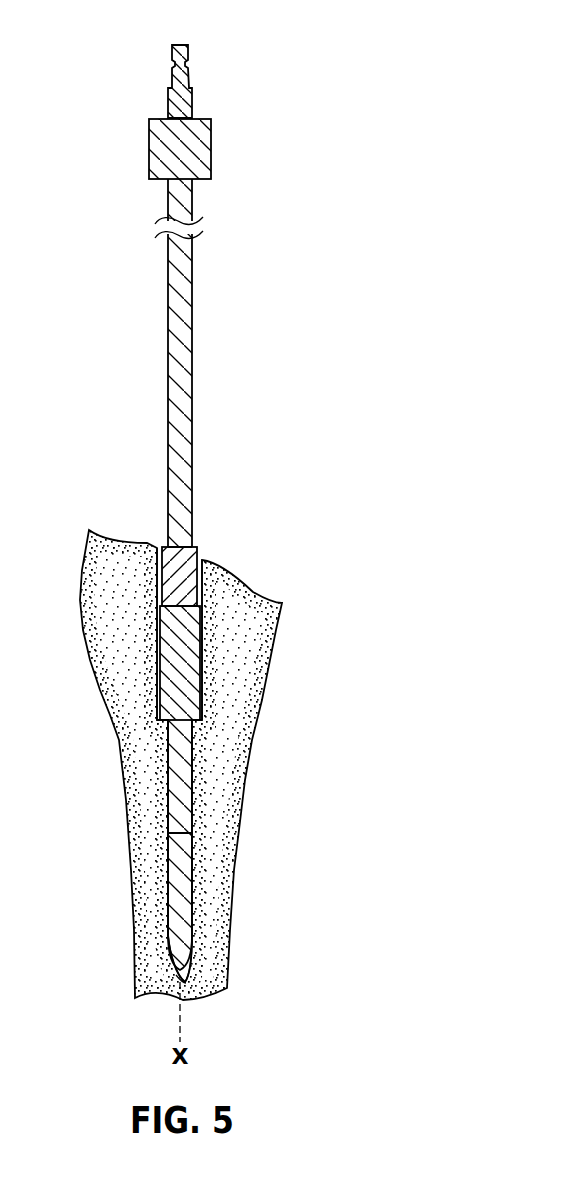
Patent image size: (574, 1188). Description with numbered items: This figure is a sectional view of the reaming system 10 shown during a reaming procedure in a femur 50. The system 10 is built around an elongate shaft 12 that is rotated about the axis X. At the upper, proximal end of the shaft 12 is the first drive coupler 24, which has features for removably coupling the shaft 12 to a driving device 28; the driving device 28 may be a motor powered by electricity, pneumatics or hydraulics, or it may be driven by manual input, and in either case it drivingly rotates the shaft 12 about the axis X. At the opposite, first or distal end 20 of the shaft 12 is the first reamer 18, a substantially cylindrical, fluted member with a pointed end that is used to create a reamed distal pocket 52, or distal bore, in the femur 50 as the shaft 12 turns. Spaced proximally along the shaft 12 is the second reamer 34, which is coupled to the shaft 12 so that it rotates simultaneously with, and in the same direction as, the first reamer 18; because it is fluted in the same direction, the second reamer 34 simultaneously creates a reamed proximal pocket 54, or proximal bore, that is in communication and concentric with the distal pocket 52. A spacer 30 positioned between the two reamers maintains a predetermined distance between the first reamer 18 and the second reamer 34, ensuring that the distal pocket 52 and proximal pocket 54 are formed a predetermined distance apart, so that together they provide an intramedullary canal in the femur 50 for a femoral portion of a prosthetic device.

The reaming system 10 is at (264, 554).
The shaft 12 is at (185, 271).
The first reamer 18 is at (180, 894).
The first (distal) end 20 is at (186, 983).
The first drive coupler 24 is at (185, 204).
The driving device 28 is at (187, 150).
The spacer 30 is at (180, 774).
The second reamer 34 is at (177, 664).
The femur 50 is at (137, 715).
The distal pocket 52 is at (167, 877).
The proximal pocket 54 is at (160, 653).